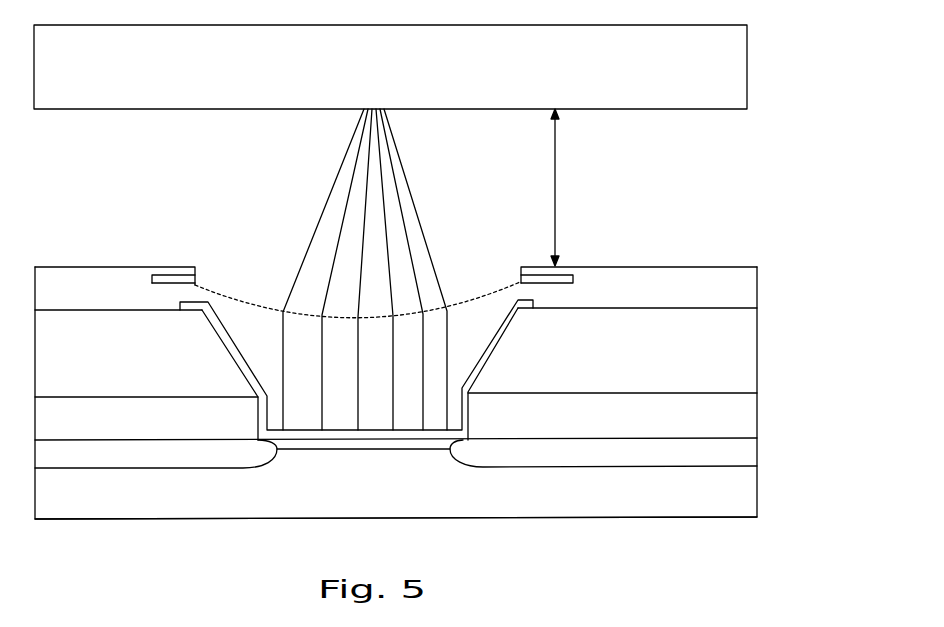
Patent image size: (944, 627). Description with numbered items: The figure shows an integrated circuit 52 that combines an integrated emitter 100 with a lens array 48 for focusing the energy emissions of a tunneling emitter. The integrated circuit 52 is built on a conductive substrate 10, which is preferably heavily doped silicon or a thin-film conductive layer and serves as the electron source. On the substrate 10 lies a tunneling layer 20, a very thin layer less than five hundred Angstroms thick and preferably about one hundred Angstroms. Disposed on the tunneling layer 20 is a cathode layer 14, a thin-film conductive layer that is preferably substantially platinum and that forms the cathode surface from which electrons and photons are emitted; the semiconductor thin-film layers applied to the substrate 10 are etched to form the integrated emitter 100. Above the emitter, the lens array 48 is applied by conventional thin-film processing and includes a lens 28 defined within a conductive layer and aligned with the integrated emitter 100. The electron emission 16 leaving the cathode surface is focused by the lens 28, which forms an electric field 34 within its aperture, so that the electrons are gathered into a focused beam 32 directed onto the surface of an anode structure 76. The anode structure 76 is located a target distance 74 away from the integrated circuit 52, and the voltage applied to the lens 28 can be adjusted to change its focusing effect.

The anode structure 76 is at (487, 108).
The target distance 74 is at (555, 183).
The lens 28 is at (568, 268).
The lens array 48 is at (690, 267).
The electron emission 16 is at (340, 180).
The focused beam 32 is at (397, 170).
The electric field 34 is at (457, 307).
The cathode layer 14 is at (483, 353).
The integrated circuit 52 is at (772, 267).
The conductive substrate 10 is at (695, 518).
The tunneling layer 20 is at (407, 452).
The integrated emitter 100 is at (253, 242).